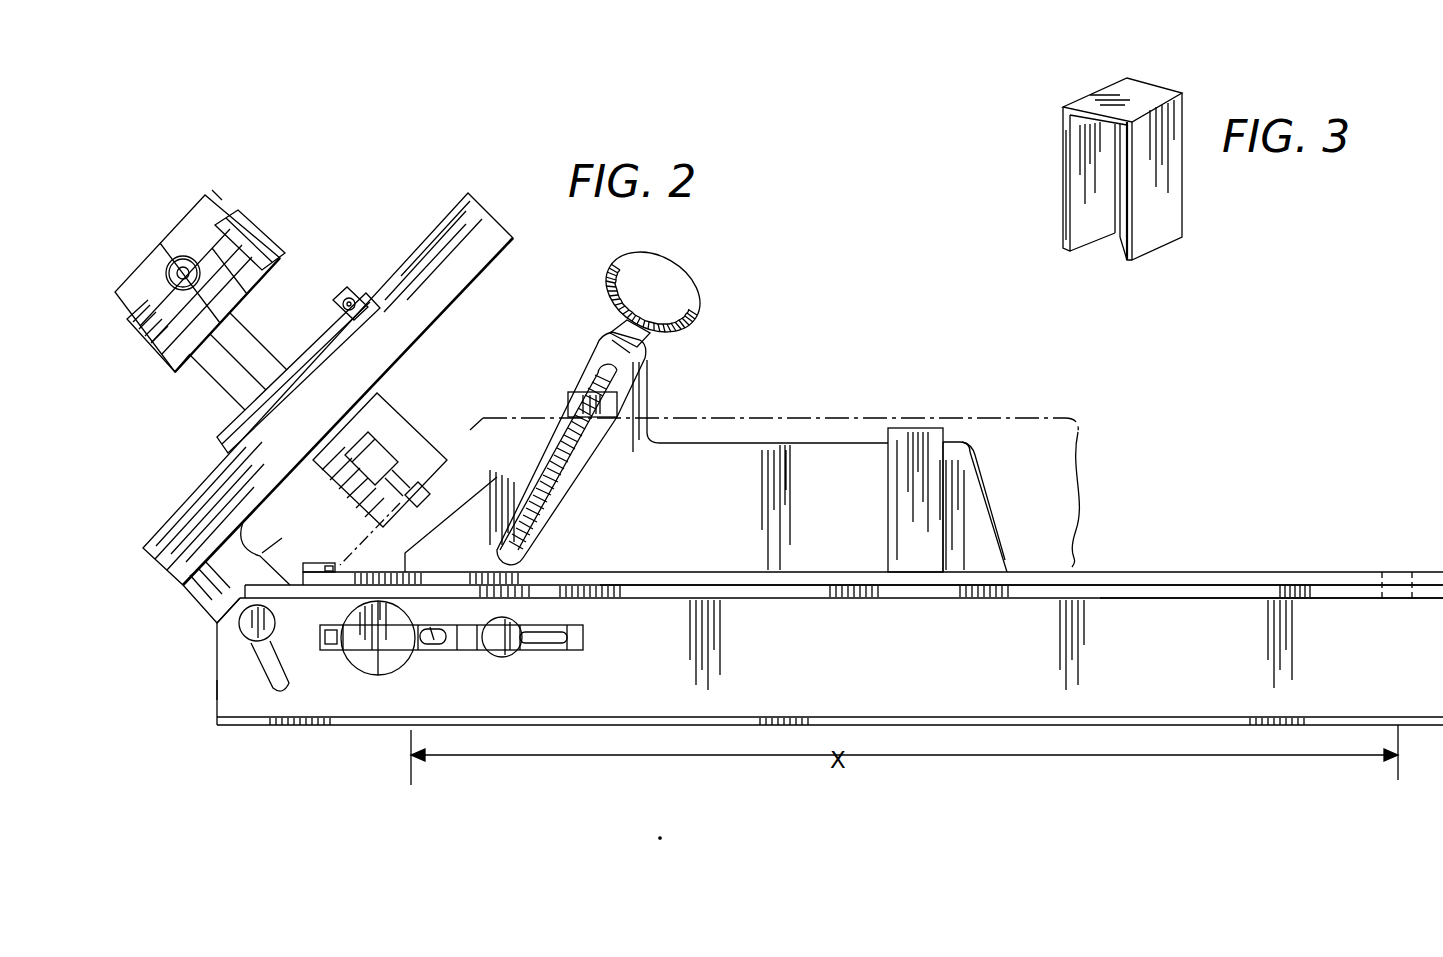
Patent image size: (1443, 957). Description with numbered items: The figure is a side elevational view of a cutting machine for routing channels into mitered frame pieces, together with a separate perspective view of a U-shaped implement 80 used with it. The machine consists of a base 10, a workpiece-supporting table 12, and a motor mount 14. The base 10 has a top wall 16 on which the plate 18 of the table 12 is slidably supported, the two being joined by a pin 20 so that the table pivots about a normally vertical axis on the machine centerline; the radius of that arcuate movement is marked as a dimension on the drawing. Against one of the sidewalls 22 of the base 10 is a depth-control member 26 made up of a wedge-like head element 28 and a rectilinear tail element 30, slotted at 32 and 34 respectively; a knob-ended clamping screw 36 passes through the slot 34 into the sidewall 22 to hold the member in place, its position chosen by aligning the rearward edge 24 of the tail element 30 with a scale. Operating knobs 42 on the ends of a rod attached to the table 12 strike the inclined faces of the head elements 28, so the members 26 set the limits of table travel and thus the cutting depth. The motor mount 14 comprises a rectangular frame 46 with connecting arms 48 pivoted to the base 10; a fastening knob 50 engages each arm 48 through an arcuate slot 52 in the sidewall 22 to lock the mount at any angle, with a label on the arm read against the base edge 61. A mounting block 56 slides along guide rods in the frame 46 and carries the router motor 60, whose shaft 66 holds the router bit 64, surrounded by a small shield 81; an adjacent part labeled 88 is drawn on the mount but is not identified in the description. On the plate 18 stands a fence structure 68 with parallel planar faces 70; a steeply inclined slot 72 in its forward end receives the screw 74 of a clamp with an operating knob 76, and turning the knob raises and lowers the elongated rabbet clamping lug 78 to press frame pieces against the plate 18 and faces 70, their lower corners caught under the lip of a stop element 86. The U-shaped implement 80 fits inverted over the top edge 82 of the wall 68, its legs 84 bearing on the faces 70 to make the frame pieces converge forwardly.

In FIG. 2, the base 10 is at (218, 668).
In FIG. 2, the workpiece-supporting table 12 is at (1296, 568).
In FIG. 2, the motor mount 14 is at (319, 408).
In FIG. 2, the top wall 16 is at (918, 600).
In FIG. 2, the plate 18 is at (1140, 575).
In FIG. 2, the pin 20 is at (1393, 598).
In FIG. 2, the sidewalls 22 is at (746, 572).
In FIG. 2, the rearward edge 24 is at (586, 638).
In FIG. 2, the depth-control member 26 is at (446, 656).
In FIG. 2, the head element 28 is at (322, 650).
In FIG. 2, the tail element 30 is at (562, 650).
In FIG. 2, the slot 32 is at (432, 627).
In FIG. 2, the slot 34 is at (537, 644).
In FIG. 2, the clamping screw 36 is at (498, 645).
In FIG. 2, the operating knobs 42 is at (383, 657).
In FIG. 2, the rectangular frame 46 is at (456, 289).
In FIG. 2, the connecting arms 48 is at (198, 602).
In FIG. 2, the fastening knob 50 is at (243, 622).
In FIG. 2, the slot 52 is at (268, 684).
In FIG. 2, the mounting block 56 is at (309, 341).
In FIG. 2, the router motor 60 is at (202, 210).
In FIG. 2, the base edge 61 is at (232, 590).
In FIG. 2, the router bit 64 is at (425, 505).
In FIG. 2, the shaft 66 is at (362, 413).
In FIG. 2, the fence structure 68 is at (1000, 530).
In FIG. 2, the planar faces 70 is at (965, 478).
In FIG. 2, the inclined slot 72 is at (555, 470).
In FIG. 2, the screw 74 is at (540, 510).
In FIG. 2, the operating knob 76 is at (690, 283).
In FIG. 2, the rabbet clamping lug 78 is at (622, 404).
In FIG. 2, the U-shaped implement 80 is at (886, 478).
In FIG. 3, the U-shaped implement 80 is at (1190, 106).
In FIG. 2, the shield 81 is at (417, 460).
In FIG. 2, the top edge 82 is at (712, 444).
In FIG. 2, the legs 84 is at (912, 520).
In FIG. 3, the legs 84 is at (1095, 207).
In FIG. 2, the stop element 86 is at (325, 563).
In FIG. 2, the cylinder 88 is at (348, 473).